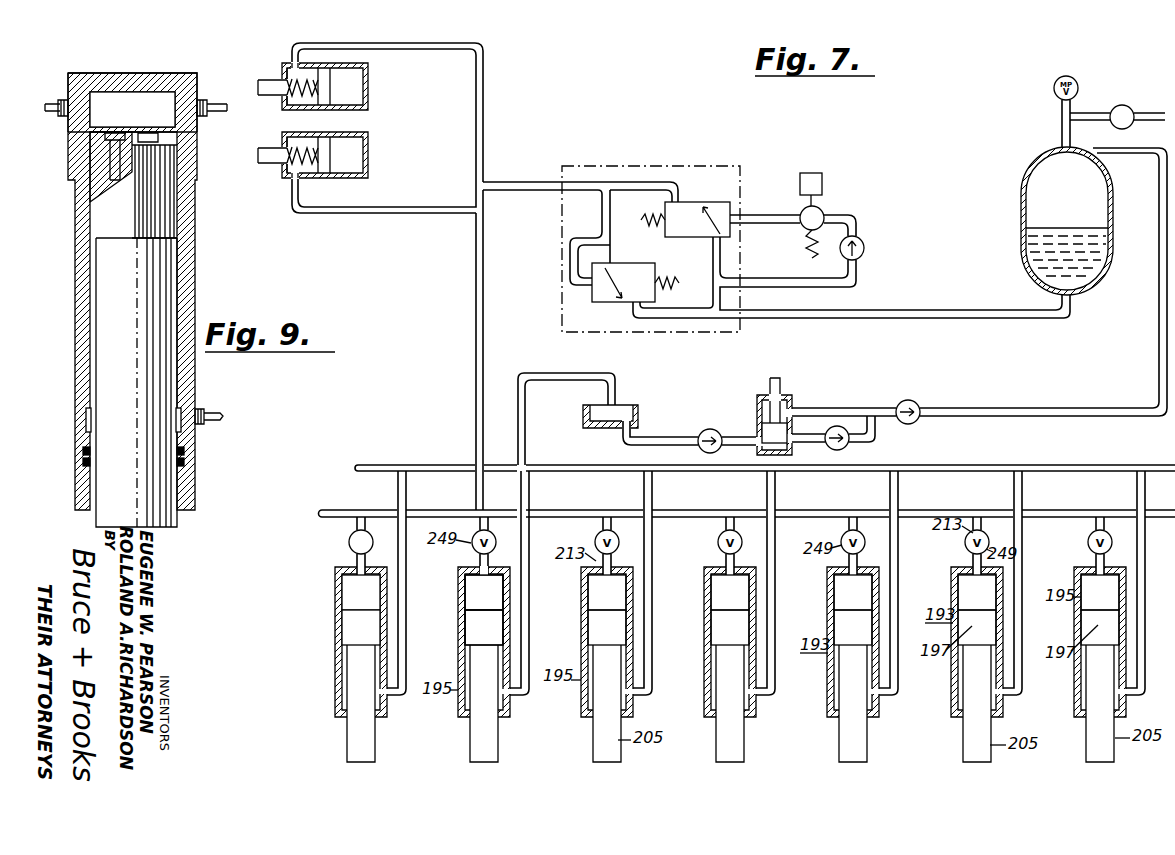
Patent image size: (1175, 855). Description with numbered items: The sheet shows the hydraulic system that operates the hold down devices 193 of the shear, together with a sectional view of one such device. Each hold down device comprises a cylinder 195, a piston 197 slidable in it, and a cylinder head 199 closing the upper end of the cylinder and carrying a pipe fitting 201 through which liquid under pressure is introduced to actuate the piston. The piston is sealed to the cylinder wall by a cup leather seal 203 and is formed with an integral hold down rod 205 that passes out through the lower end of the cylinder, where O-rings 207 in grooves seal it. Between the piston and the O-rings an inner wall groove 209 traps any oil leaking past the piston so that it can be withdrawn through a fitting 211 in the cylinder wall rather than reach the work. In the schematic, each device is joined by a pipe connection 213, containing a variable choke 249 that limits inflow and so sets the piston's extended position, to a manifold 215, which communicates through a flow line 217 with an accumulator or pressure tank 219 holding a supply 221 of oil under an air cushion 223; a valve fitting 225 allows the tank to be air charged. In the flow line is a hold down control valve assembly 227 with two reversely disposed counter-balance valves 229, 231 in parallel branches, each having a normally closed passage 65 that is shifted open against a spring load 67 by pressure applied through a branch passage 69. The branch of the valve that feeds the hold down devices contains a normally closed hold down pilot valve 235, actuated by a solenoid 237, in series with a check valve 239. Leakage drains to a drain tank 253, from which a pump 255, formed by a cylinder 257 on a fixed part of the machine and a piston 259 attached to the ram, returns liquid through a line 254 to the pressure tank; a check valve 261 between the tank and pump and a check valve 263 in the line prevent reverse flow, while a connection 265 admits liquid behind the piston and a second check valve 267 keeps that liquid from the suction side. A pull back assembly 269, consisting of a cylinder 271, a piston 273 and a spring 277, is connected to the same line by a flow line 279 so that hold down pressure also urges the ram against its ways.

In FIG. 7, the normally closed passage 65 is at (706, 220).
In FIG. 7, the spring load 67 is at (642, 218).
In FIG. 7, the branch passage 69 is at (570, 258).
In FIG. 9, the hold down device 193 is at (148, 275).
In FIG. 7, the hold down device 193 is at (333, 637).
In FIG. 9, the cylinder 195 is at (75, 291).
In FIG. 7, the cylinder 195 is at (335, 597).
In FIG. 9, the piston 197 is at (168, 213).
In FIG. 7, the piston 197 is at (476, 621).
In FIG. 9, the cylinder head 199 is at (118, 73).
In FIG. 9, the pipe fitting 201 is at (201, 100).
In FIG. 9, the cup leather seal 203 is at (116, 133).
In FIG. 9, the hold down rod 205 is at (115, 373).
In FIG. 7, the hold down rod 205 is at (372, 745).
In FIG. 9, the O-rings 207 is at (184, 453).
In FIG. 9, the inner wall groove 209 is at (92, 426).
In FIG. 9, the fitting 211 is at (200, 412).
In FIG. 7, the pipe connection 213 is at (364, 560).
In FIG. 7, the manifold 215 is at (587, 510).
In FIG. 7, the flow line 217 is at (476, 302).
In FIG. 7, the accumulator or pressure tank 219 is at (1048, 221).
In FIG. 7, the supply of oil 221 is at (1036, 240).
In FIG. 7, the air cushion 223 is at (1023, 180).
In FIG. 7, the valve fitting 225 is at (1140, 103).
In FIG. 7, the hold down control valve assembly 227 is at (700, 258).
In FIG. 7, the counter-balance valve 229 is at (607, 301).
In FIG. 7, the counter-balance valve 231 is at (690, 203).
In FIG. 7, the hold down pilot valve 235 is at (822, 213).
In FIG. 7, the solenoid 237 is at (800, 182).
In FIG. 7, the check valve 239 is at (865, 258).
In FIG. 7, the variable choke 249 is at (348, 541).
In FIG. 7, the drain tank 253 is at (607, 430).
In FIG. 7, the line 254 is at (1077, 408).
In FIG. 7, the pump 255 is at (762, 400).
In FIG. 7, the cylinder 257 is at (996, 463).
In FIG. 7, the piston 259 is at (765, 425).
In FIG. 7, the check valve 261 is at (700, 449).
In FIG. 7, the check valve 263 is at (905, 424).
In FIG. 7, the connection 265 is at (844, 402).
In FIG. 7, the second check valve 267 is at (826, 447).
In FIG. 7, the pull back assembly 269 is at (408, 95).
In FIG. 7, the cylinder 271 is at (352, 107).
In FIG. 7, the piston 273 is at (333, 76).
In FIG. 7, the spring 277 is at (283, 107).
In FIG. 7, the flow line 279 is at (485, 115).